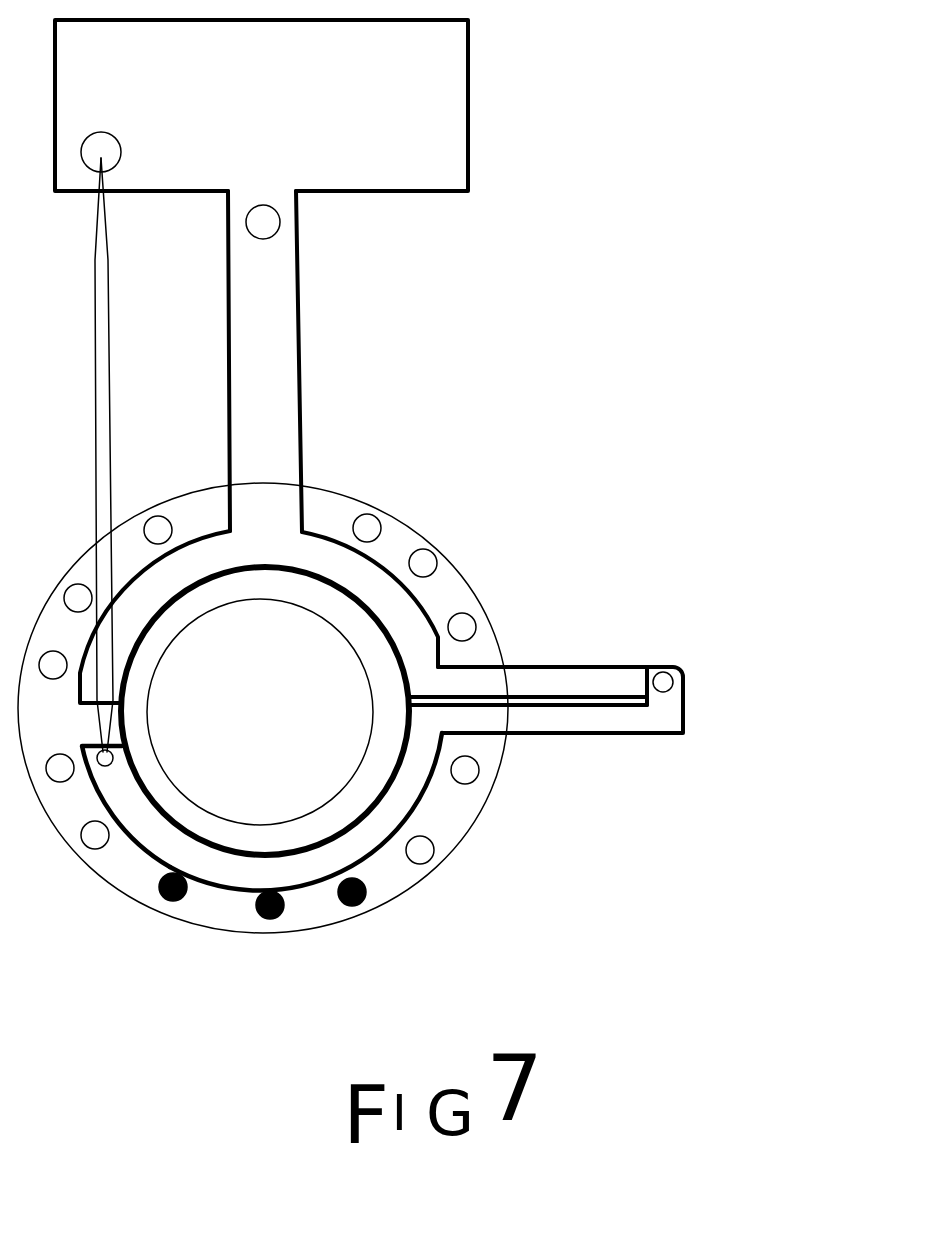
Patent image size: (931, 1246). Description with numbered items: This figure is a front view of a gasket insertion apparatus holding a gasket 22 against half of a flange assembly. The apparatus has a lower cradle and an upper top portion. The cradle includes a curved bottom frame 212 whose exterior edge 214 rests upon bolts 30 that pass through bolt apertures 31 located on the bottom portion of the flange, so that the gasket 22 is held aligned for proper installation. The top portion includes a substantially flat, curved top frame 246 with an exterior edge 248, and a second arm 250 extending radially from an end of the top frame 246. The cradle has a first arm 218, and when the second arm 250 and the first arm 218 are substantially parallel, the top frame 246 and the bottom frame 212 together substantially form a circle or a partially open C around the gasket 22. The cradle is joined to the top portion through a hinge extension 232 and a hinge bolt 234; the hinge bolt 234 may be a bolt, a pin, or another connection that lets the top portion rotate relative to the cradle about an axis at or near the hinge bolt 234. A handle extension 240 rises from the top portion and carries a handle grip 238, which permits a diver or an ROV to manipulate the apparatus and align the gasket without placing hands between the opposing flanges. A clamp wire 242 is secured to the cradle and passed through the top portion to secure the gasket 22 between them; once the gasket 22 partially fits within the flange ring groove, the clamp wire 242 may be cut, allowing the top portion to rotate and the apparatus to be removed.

The gasket 22 is at (340, 620).
The bolts 30 is at (173, 900).
The bolt apertures 31 is at (417, 558).
The bottom frame 212 is at (145, 830).
The exterior edge 214 is at (222, 885).
The first arm 218 is at (578, 720).
The hinge extension 232 is at (665, 710).
The hinge bolt 234 is at (663, 682).
The handle grip 238 is at (447, 140).
The handle extension 240 is at (277, 398).
The clamp wire 242 is at (95, 397).
The top frame 246 is at (365, 565).
The exterior edge 248 is at (435, 617).
The second arm 250 is at (563, 682).